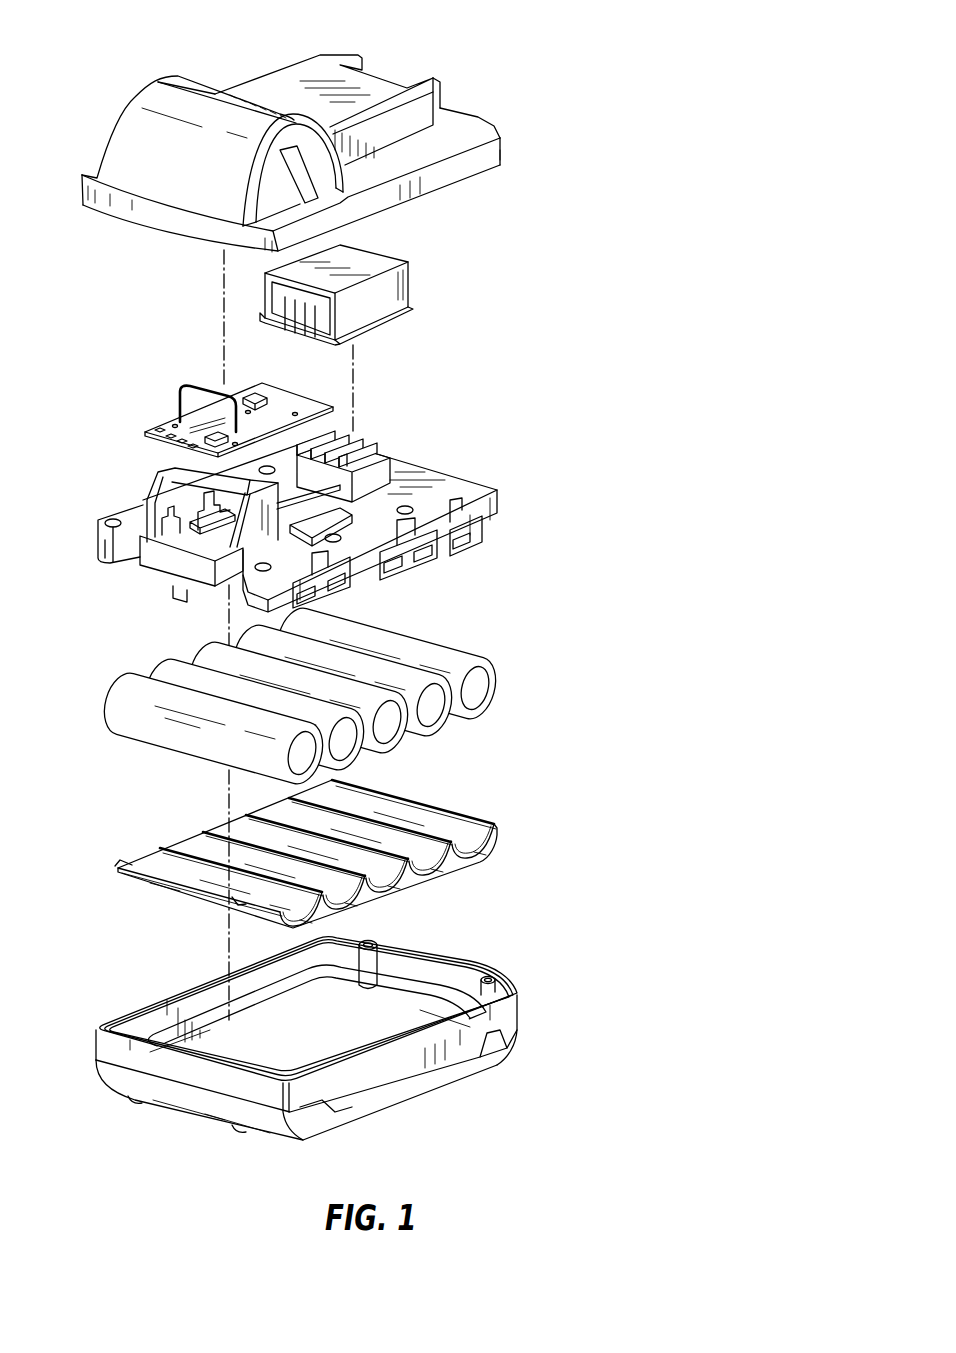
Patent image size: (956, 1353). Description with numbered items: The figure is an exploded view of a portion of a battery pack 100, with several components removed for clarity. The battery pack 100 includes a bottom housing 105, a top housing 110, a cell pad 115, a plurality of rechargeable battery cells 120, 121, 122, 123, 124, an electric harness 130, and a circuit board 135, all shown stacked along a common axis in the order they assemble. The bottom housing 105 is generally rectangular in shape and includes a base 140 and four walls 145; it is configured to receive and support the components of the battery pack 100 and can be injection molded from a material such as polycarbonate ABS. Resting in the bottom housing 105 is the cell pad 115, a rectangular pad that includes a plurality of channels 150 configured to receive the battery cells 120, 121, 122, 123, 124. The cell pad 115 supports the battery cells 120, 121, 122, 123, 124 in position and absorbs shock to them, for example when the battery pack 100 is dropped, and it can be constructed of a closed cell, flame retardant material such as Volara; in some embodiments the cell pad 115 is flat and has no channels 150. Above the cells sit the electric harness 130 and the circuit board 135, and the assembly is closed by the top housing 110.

The battery pack 100 is at (360, 608).
The bottom housing 105 is at (354, 1031).
The top housing 110 is at (172, 222).
The cell pad 115 is at (282, 854).
The rechargeable battery cell 120 is at (137, 690).
The rechargeable battery cell 121 is at (177, 667).
The rechargeable battery cell 122 is at (220, 647).
The rechargeable battery cell 123 is at (323, 655).
The rechargeable battery cell 124 is at (458, 658).
The electric harness 130 is at (415, 433).
The circuit board 135 is at (167, 422).
The base 140 is at (372, 1027).
The walls 145 is at (150, 1002).
The channels 150 is at (183, 863).